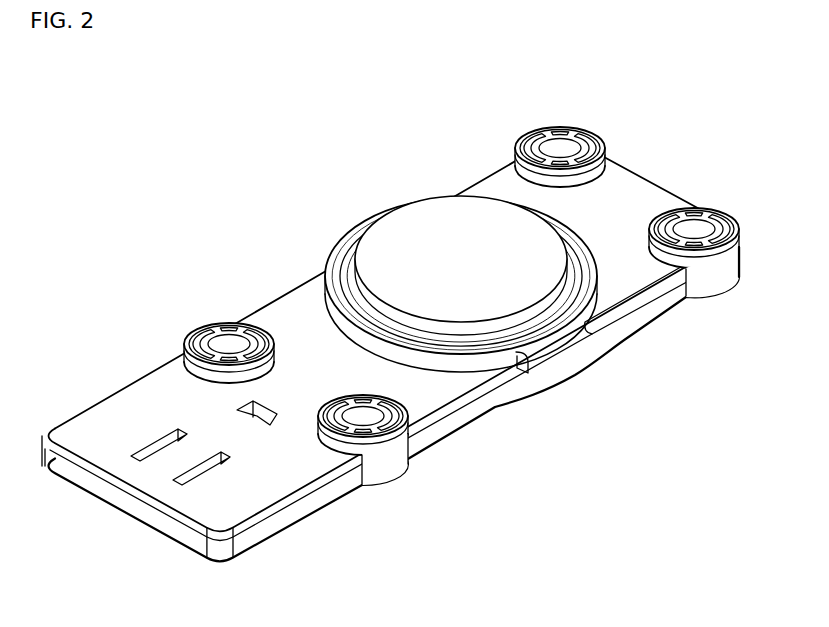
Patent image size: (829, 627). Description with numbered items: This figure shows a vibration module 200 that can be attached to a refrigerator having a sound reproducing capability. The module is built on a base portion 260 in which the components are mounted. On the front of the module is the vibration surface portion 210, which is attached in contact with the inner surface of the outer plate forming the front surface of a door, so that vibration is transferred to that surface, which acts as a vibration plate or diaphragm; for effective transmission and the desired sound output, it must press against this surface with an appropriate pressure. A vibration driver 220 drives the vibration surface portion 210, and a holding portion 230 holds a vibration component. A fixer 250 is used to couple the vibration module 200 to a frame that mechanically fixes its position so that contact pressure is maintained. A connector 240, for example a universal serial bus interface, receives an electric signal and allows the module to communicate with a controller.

The vibration module 200 is at (153, 76).
The vibration surface portion 210 is at (405, 216).
The vibration driver 220 is at (343, 297).
The holding portion 230 is at (345, 324).
The connector 240 is at (173, 462).
The fixer 250 is at (214, 328).
The base portion 260 is at (120, 507).